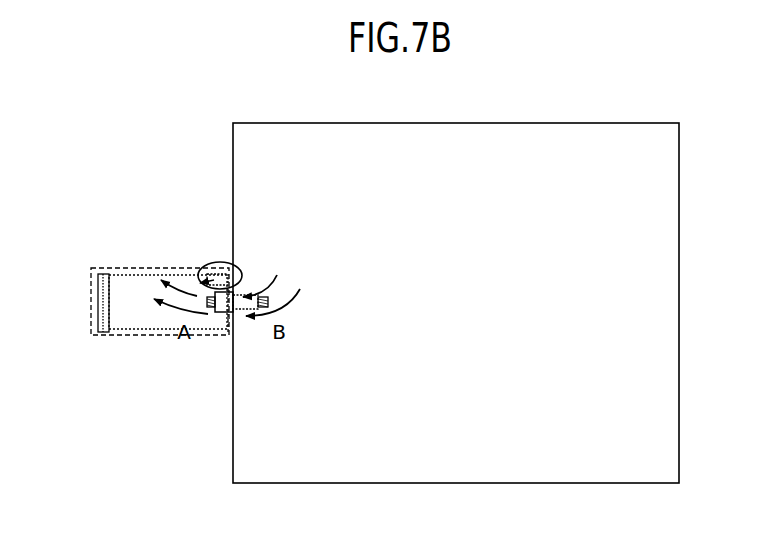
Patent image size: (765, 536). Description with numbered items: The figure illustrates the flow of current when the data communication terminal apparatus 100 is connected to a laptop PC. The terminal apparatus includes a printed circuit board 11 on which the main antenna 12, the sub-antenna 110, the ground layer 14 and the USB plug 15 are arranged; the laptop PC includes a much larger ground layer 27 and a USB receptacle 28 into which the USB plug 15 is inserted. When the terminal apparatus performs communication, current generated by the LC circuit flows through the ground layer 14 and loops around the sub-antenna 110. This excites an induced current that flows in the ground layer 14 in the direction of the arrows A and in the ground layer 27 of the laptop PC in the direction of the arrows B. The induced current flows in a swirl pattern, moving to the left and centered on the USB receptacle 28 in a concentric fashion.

The ground layer 27 is at (628, 123).
The data communication terminal apparatus 100 is at (138, 252).
The printed circuit board 11 is at (112, 336).
The main antenna 12 is at (98, 298).
The ground layer 14 is at (162, 330).
The USB plug 15 is at (222, 313).
The sub-antenna 110 is at (215, 268).
The USB receptacle 28 is at (252, 292).